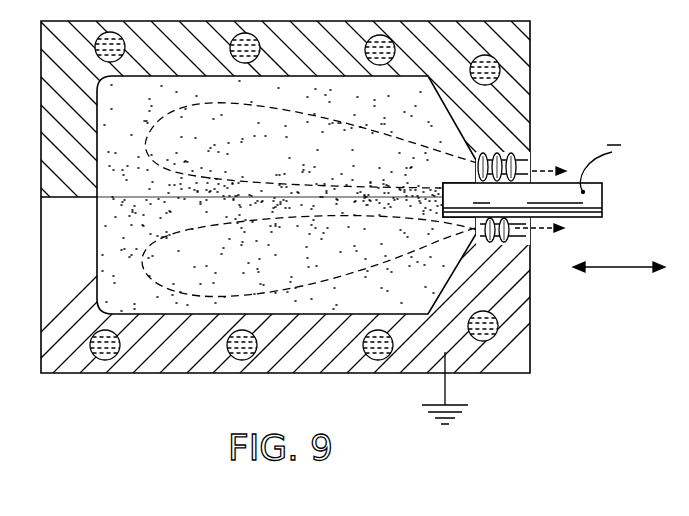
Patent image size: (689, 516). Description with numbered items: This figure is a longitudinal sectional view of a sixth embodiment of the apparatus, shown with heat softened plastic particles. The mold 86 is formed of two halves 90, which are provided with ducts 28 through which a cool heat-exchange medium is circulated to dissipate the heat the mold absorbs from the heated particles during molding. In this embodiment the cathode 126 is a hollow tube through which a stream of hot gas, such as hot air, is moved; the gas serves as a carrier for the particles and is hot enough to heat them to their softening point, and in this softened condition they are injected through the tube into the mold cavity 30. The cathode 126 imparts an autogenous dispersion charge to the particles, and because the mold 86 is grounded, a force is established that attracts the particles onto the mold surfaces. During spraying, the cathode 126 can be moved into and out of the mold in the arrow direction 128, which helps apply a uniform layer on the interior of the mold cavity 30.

The ducts 28 is at (497, 334).
The mold cavity 30 is at (386, 96).
The mold 86 is at (33, 180).
The mold halves 90 is at (163, 384).
The cathode 126 is at (590, 200).
The arrow direction 128 is at (626, 268).